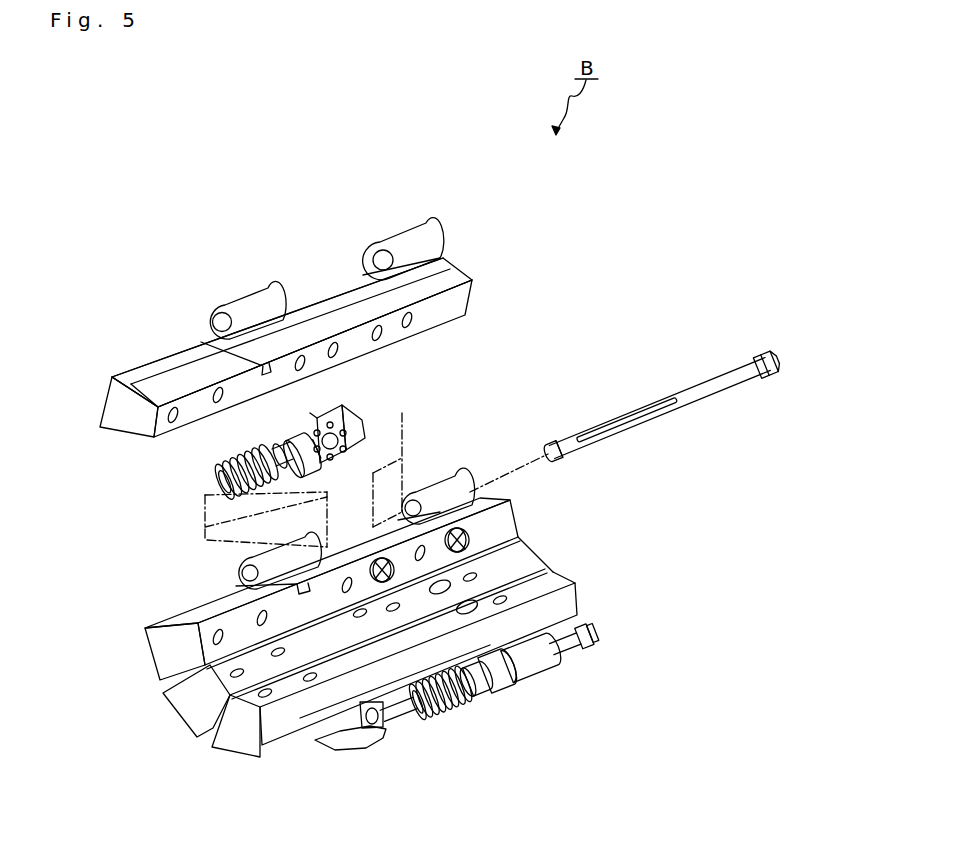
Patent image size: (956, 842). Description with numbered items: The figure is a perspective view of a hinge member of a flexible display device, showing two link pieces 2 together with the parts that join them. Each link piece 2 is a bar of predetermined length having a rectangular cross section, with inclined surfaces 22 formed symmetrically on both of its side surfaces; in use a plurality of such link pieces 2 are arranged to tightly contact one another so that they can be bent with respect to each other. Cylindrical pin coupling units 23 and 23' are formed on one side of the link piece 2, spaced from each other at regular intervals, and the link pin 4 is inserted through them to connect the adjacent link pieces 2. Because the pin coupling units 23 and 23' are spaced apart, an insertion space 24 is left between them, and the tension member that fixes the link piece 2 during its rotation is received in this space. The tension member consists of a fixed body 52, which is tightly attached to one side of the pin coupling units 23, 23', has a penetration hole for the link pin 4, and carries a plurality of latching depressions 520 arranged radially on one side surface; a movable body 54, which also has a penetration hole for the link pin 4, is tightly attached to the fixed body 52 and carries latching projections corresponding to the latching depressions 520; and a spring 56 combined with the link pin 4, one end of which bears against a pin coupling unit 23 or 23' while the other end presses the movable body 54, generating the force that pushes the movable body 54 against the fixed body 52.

The link piece 2 is at (468, 265).
The inclined surfaces 22 is at (358, 307).
The pin coupling unit 23 is at (487, 436).
The pin coupling unit 23' is at (230, 406).
The insertion space 24 is at (321, 281).
The link pin 4 is at (718, 378).
The fixed body 52 is at (345, 416).
The movable body 54 is at (300, 438).
The spring 56 is at (221, 453).
The latching depressions 520 is at (375, 472).